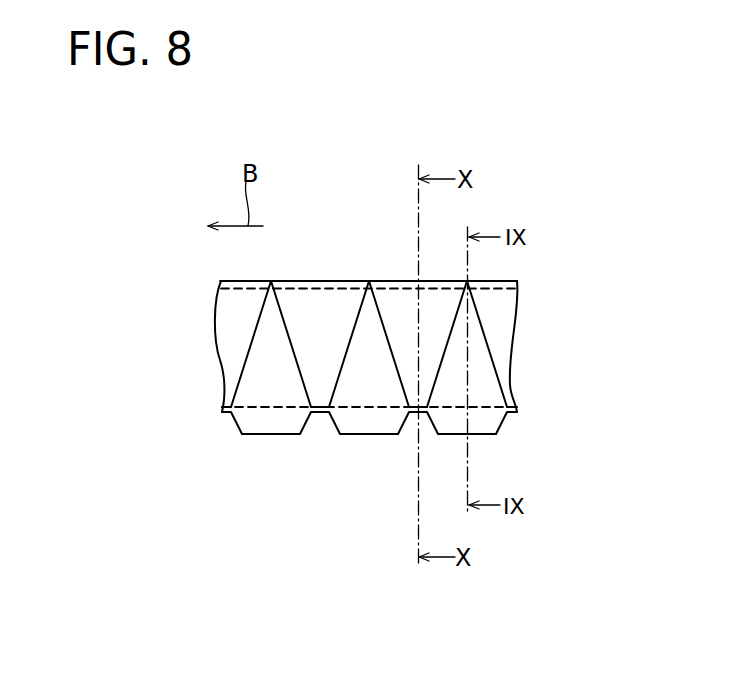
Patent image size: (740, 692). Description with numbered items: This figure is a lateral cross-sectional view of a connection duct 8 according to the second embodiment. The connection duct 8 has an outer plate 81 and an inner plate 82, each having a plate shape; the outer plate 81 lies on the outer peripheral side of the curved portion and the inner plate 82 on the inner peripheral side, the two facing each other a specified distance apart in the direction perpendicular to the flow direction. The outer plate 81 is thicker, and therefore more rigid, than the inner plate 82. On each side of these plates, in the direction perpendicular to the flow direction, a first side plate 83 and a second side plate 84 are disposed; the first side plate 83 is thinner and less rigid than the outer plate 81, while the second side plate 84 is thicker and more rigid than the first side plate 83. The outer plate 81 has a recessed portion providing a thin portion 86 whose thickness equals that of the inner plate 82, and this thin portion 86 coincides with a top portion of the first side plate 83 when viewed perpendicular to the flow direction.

The connection duct 8 is at (205, 287).
The outer plate 81 is at (252, 421).
The inner plate 82 is at (499, 292).
The first side plate 83 is at (322, 320).
The second side plate 84 is at (270, 365).
The thin portion 86 is at (315, 413).